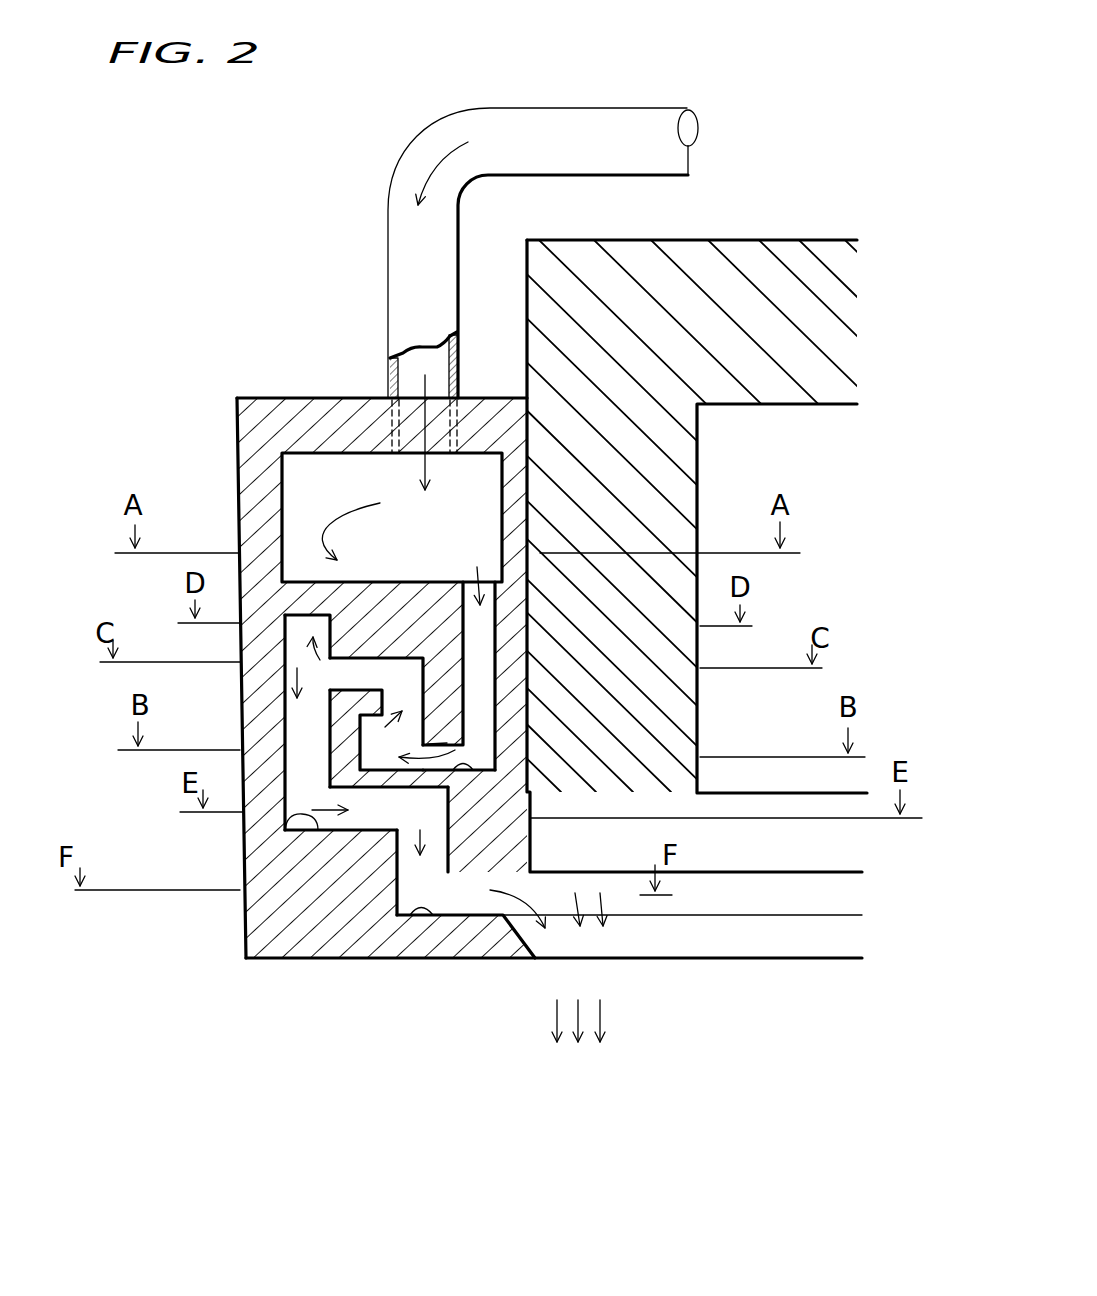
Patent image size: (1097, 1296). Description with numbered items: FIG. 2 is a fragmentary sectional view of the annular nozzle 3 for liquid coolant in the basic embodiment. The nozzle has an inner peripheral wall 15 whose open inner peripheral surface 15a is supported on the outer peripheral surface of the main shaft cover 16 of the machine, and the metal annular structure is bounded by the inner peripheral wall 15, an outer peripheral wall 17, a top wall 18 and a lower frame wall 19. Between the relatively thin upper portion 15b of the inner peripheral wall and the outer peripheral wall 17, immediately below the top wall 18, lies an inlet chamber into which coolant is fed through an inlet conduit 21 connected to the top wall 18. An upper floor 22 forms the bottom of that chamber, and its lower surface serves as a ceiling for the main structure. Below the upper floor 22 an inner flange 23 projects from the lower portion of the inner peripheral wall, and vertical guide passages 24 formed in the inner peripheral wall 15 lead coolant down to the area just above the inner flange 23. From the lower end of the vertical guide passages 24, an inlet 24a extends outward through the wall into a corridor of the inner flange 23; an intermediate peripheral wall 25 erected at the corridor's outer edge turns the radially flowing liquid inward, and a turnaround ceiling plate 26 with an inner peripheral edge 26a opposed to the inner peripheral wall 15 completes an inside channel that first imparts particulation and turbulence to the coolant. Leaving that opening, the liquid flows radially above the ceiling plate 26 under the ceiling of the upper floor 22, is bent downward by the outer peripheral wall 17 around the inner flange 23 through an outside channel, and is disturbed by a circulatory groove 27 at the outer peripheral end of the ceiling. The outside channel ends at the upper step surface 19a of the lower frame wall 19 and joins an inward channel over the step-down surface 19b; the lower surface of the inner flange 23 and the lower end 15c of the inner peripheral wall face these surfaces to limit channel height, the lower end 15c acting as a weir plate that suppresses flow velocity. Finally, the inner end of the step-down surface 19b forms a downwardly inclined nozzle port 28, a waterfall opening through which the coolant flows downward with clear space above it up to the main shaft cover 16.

The annular nozzle 3 is at (245, 1048).
The inner peripheral wall 15 is at (414, 674).
The open inner peripheral surface 15a is at (527, 465).
The upper portion of the inner peripheral wall 15b is at (496, 490).
The lower end of the inner peripheral wall 15c is at (460, 840).
The main shaft cover 16 is at (722, 240).
The outer peripheral wall 17 is at (245, 492).
The top wall 18 is at (333, 408).
The lower frame wall 19 is at (300, 923).
The upper step surface 19a is at (285, 818).
The step-down surface 19b is at (402, 917).
The inlet conduit 21 is at (560, 108).
The upper floor 22 is at (348, 493).
The inner flange 23 is at (372, 795).
The vertical guide passages 24 is at (480, 710).
The inlet 24a is at (476, 762).
The intermediate peripheral wall 25 is at (330, 732).
The turnaround ceiling plate 26 is at (358, 690).
The inner peripheral edge 26a is at (383, 702).
The circulatory groove 27 is at (283, 620).
The nozzle port 28 is at (535, 960).